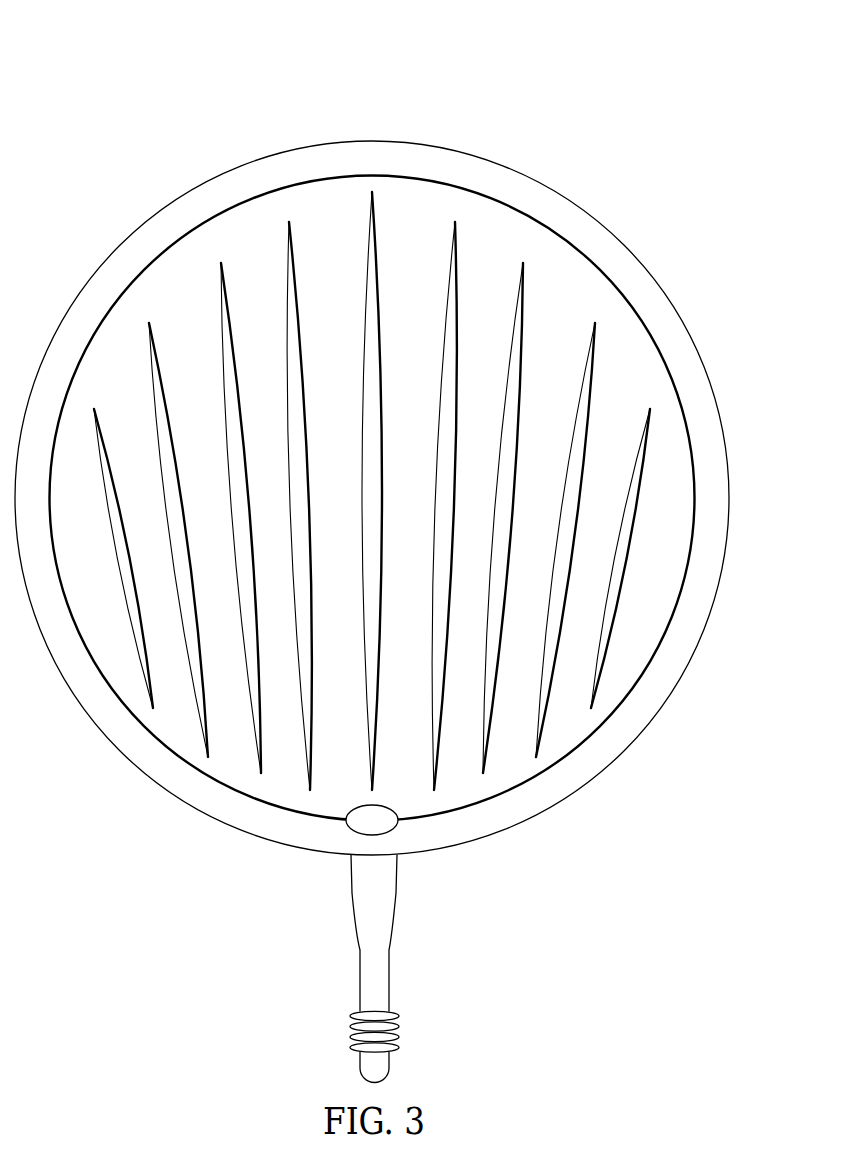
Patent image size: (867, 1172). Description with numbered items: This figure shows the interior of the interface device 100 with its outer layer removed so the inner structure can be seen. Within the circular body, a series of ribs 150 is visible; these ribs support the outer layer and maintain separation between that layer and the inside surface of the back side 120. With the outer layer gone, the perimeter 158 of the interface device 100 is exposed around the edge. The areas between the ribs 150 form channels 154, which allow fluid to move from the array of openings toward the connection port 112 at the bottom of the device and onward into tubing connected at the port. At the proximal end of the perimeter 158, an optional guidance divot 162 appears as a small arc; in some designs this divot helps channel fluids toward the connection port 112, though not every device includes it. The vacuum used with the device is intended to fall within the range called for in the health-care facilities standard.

The interface device 100 is at (392, 588).
The connection port 112 is at (399, 886).
The back side 120 is at (243, 220).
The ribs 150 is at (605, 660).
The channels 154 is at (645, 612).
The perimeter 158 is at (547, 810).
The guidance divot 162 is at (345, 825).